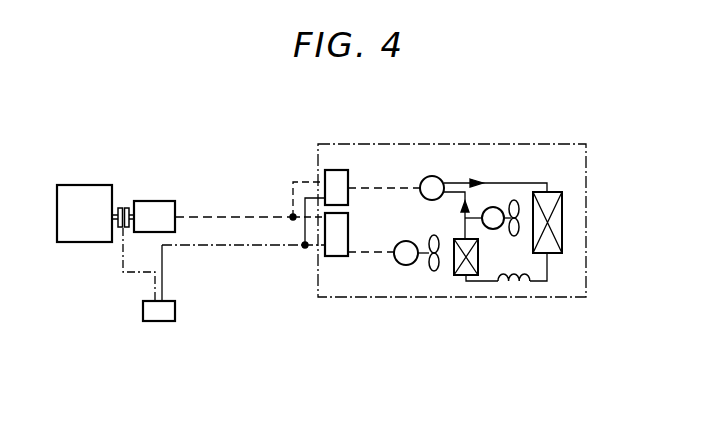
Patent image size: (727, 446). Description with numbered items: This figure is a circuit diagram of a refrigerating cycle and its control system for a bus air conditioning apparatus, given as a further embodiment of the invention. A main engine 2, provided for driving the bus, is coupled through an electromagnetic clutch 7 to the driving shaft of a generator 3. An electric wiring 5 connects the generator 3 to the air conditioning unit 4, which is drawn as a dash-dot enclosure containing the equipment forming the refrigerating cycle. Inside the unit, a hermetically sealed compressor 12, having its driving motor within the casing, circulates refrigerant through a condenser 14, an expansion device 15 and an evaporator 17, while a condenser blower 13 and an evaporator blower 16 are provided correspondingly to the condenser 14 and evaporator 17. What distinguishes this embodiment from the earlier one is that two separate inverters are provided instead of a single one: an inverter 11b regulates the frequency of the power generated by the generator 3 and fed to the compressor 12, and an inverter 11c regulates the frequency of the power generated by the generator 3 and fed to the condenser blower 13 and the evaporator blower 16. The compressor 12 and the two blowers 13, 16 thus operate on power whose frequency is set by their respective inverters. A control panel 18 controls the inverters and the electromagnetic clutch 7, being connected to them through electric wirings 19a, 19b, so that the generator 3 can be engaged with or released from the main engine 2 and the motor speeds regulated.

The main engine 2 is at (88, 186).
The generator 3 is at (162, 202).
The electromagnetic clutch 7 is at (123, 229).
The electric wiring 5 is at (248, 216).
The electric wiring 19a is at (128, 274).
The electric wiring 19b is at (255, 247).
The control panel 18 is at (166, 322).
The air conditioning unit 4 is at (487, 298).
The inverter 11b is at (340, 172).
The inverter 11c is at (335, 257).
The compressor 12 is at (440, 177).
The condenser blower 13 is at (497, 207).
The condenser 14 is at (562, 212).
The expansion device 15 is at (524, 283).
The evaporator blower 16 is at (405, 266).
The evaporator 17 is at (456, 272).